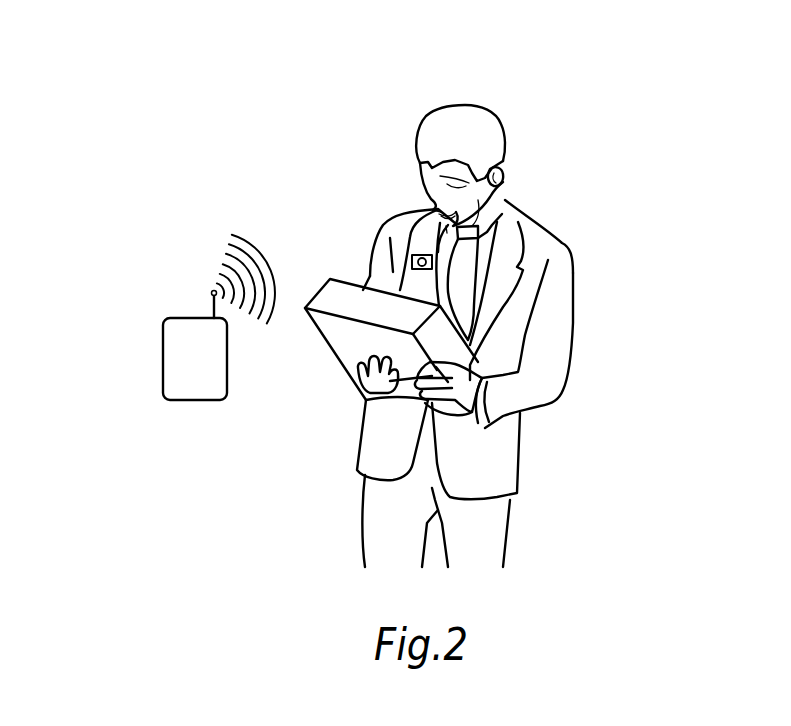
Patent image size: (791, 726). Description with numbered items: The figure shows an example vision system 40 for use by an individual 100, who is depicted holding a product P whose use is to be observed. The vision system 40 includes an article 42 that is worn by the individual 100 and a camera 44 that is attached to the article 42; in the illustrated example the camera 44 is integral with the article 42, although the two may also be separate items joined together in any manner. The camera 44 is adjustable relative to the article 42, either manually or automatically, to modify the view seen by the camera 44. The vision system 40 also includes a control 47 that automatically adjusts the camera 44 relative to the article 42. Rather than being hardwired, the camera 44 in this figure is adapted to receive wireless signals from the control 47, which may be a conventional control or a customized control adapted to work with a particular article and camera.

The vision system 40 is at (623, 213).
The individual 100 is at (464, 116).
The article 42 is at (410, 265).
The camera 44 is at (422, 256).
The product P is at (338, 338).
The control 47 is at (175, 357).